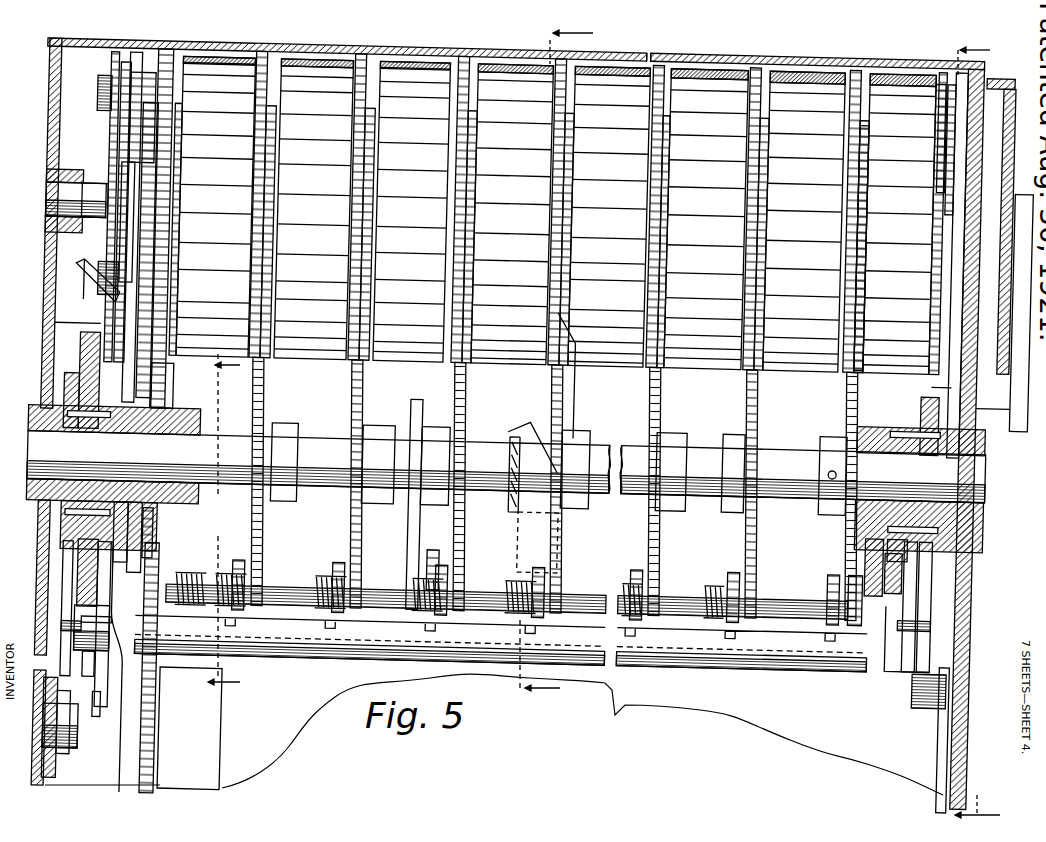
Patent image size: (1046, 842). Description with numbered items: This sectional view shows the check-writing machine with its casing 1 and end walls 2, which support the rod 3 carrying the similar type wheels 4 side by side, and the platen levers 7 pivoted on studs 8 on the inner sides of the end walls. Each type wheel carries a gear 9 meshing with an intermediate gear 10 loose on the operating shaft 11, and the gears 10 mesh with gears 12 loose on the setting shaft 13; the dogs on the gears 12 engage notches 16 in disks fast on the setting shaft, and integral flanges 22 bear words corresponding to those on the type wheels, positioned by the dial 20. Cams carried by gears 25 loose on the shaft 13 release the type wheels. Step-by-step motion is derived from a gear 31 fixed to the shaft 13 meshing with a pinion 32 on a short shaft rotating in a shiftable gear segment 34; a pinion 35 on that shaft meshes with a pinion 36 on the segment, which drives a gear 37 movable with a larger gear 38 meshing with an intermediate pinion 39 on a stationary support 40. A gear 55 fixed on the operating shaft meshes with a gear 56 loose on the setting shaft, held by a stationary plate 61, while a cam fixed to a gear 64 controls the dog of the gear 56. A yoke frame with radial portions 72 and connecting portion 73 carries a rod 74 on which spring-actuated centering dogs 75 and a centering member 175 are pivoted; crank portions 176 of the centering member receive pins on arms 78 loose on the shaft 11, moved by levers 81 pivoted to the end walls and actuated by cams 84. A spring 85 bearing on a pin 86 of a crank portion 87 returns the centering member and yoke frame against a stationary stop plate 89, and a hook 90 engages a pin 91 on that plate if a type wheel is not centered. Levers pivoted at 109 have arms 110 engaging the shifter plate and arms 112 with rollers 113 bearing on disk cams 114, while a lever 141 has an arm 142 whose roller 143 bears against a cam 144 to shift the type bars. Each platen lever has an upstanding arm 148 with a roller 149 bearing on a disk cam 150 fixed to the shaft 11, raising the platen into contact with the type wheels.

The casing 1 is at (516, 50).
The end walls 2 is at (500, 425).
The rod 3 is at (553, 368).
The type wheels 4 is at (969, 426).
The levers 7 is at (57, 727).
The studs 8 is at (63, 722).
The gear 9 is at (213, 530).
The intermediate gear 10 is at (554, 488).
The operating shaft 11 is at (506, 468).
The gears 12 is at (408, 190).
The setting shaft 13 is at (57, 201).
The notches 16 is at (1004, 314).
The dial 20 is at (998, 211).
The flanges 22 is at (510, 196).
The gears 25 is at (562, 218).
The gear 31 is at (97, 273).
The pinion 32 is at (118, 185).
The shiftable gear segment 34 is at (100, 199).
The pinion 35 is at (148, 208).
The pinion 36 is at (106, 107).
The gear 37 is at (111, 212).
The larger gear 38 is at (184, 211).
The intermediate pinion 39 is at (195, 386).
The stationary support 40 is at (130, 249).
The gear 55 is at (837, 594).
The gear 56 is at (871, 248).
The stationary plate 61 is at (900, 224).
The gear 64 is at (918, 116).
The radial portions 72 is at (528, 606).
The connecting portion 73 is at (507, 642).
The rod 74 is at (500, 640).
The centering dogs 75 is at (507, 621).
The arms 78 is at (506, 427).
The levers 81 is at (502, 574).
The cams 84 is at (521, 551).
The spring 85 is at (541, 413).
The pin 86 is at (506, 551).
The crank portion 87 is at (428, 504).
The stationary stop plate 89 is at (189, 728).
The hook 90 is at (161, 668).
The pin 91 is at (124, 667).
The pivot 109 is at (895, 694).
The arms 110 is at (110, 713).
The arms 112 is at (531, 632).
The rollers 113 is at (500, 631).
The disk cams 114 is at (477, 357).
The lever 141 is at (82, 677).
The arm 142 is at (44, 608).
The roller 143 is at (55, 621).
The cam 144 is at (50, 380).
The upstanding arm 148 is at (472, 629).
The roller 149 is at (944, 568).
The disk cam 150 is at (469, 414).
The centering member 175 is at (501, 651).
The crank portions 176 is at (514, 587).